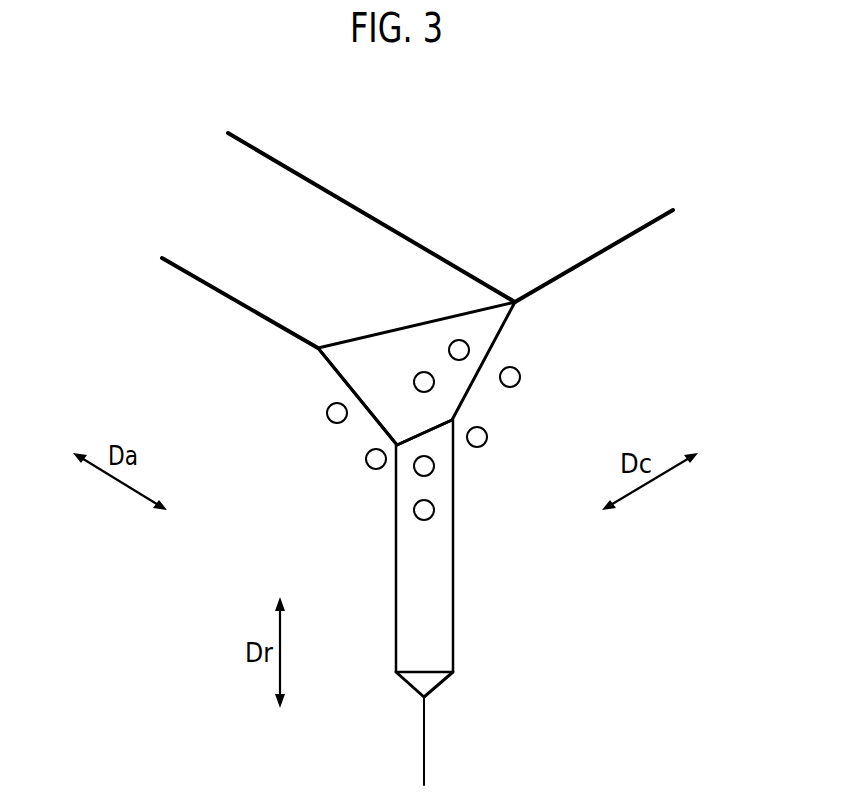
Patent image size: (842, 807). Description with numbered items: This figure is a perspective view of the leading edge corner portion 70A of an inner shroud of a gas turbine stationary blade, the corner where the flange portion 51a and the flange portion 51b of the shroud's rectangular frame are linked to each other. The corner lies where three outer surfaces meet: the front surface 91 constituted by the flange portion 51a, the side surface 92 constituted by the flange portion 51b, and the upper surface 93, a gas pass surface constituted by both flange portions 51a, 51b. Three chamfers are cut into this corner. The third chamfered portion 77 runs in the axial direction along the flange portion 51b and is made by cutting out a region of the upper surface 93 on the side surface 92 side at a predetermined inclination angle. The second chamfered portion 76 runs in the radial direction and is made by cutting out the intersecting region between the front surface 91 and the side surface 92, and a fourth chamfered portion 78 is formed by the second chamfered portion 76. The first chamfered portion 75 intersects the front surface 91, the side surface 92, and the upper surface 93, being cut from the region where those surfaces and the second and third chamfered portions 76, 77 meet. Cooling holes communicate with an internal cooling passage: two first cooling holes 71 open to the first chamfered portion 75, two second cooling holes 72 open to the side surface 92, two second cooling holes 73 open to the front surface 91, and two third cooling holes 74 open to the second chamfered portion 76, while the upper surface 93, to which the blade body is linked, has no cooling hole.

The flange portion 51a is at (662, 217).
The flange portion 51b is at (180, 272).
The leading edge corner portion 70A is at (240, 317).
The first cooling hole 71 is at (424, 372).
The second cooling hole 72 is at (333, 418).
The second cooling hole 73 is at (520, 377).
The third cooling hole 74 is at (433, 470).
The first chamfered portion 75 is at (363, 367).
The second chamfered portion 76 is at (435, 618).
The third chamfered portion 77 is at (265, 218).
The fourth chamfered portion 78 is at (418, 678).
The front surface 91 is at (533, 498).
The side surface 92 is at (260, 510).
The upper surface 93 is at (550, 170).